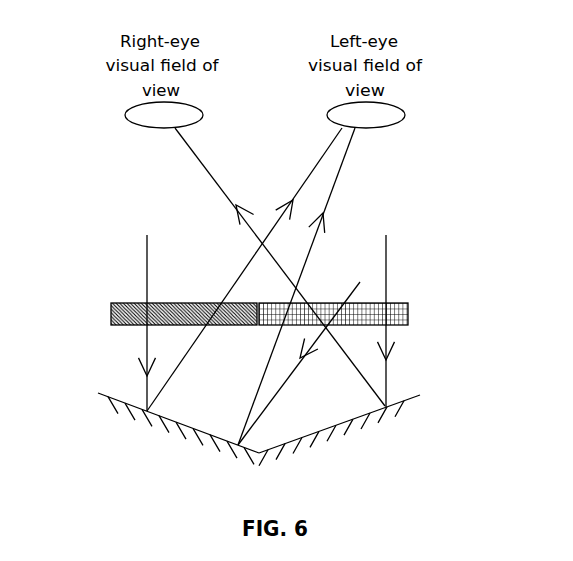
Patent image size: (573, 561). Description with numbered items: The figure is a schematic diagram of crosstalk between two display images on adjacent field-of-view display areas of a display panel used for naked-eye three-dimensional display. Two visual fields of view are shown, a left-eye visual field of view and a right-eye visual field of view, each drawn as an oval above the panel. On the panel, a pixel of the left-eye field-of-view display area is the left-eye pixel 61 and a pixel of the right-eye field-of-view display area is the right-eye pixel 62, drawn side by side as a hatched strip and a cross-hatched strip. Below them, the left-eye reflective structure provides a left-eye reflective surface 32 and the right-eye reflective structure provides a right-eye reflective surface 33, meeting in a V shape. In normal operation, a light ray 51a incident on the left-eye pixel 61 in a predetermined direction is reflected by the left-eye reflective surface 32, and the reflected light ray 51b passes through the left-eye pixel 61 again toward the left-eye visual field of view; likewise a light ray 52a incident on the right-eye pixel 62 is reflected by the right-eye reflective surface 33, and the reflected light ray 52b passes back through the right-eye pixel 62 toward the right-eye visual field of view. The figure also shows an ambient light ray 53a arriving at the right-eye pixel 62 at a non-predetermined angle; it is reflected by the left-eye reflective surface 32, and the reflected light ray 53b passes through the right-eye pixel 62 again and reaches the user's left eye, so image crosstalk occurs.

The light ray 51a is at (146, 272).
The reflected light ray 51b is at (234, 284).
The light ray 52a is at (387, 277).
The reflected light ray 52b is at (368, 384).
The ambient light ray 53a is at (352, 292).
The reflected light ray 53b is at (262, 378).
The left-eye pixel 61 is at (110, 313).
The right-eye pixel 62 is at (409, 313).
The left-eye reflective surface 32 is at (157, 418).
The right-eye reflective surface 33 is at (363, 417).